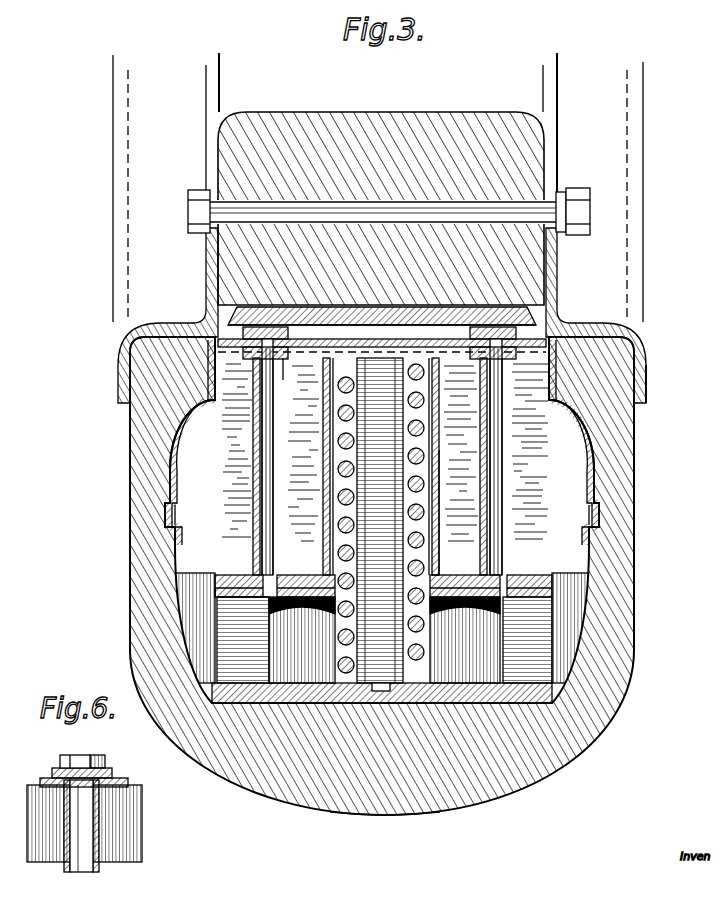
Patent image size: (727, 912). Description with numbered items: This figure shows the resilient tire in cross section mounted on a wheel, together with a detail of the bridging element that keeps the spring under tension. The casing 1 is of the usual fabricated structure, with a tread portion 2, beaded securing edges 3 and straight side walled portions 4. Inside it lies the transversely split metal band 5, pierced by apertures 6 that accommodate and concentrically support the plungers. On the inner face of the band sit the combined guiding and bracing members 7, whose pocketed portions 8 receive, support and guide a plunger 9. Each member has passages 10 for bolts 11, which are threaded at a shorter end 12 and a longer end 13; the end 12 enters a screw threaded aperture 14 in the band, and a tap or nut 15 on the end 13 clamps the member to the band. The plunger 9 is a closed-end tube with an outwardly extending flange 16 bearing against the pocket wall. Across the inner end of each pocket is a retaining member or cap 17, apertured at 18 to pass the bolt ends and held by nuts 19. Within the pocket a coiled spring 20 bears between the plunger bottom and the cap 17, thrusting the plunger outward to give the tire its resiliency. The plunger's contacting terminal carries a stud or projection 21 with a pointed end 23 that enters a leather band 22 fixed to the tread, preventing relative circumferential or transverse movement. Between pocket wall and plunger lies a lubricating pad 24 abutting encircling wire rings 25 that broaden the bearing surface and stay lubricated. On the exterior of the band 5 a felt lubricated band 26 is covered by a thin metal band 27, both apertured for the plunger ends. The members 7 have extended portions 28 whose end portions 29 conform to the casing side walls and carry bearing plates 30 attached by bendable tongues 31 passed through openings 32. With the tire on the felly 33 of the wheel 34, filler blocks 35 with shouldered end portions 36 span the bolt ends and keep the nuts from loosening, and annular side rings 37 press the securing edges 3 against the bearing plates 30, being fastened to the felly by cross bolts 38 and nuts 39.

In FIG. 3, the casing 1 is at (612, 690).
In FIG. 3, the tread portion 2 is at (394, 816).
In FIG. 3, the securing edges 3 is at (656, 382).
In FIG. 3, the straight side walled portions 4 is at (634, 541).
In FIG. 3, the metal band 5 is at (544, 576).
In FIG. 3, the apertures 6 is at (513, 628).
In FIG. 3, the combined guiding and bracing members 7 is at (385, 452).
In FIG. 3, the pocketed portions 8 is at (325, 518).
In FIG. 3, the plunger 9 is at (337, 647).
In FIG. 3, the passages 10 is at (256, 523).
In FIG. 6, the passages 10 is at (100, 829).
In FIG. 3, the bolts 11 is at (498, 465).
In FIG. 6, the bolts 11 is at (80, 870).
In FIG. 3, the screw threaded end 12 is at (243, 617).
In FIG. 3, the screw threaded end 13 is at (266, 327).
In FIG. 6, the screw threaded end 13 is at (80, 768).
In FIG. 3, the screw threaded apertures 14 is at (250, 577).
In FIG. 3, the tap or nut 15 is at (284, 360).
In FIG. 3, the outwardly extending flange 16 is at (436, 441).
In FIG. 3, the retaining member or cap 17 is at (440, 340).
In FIG. 6, the retaining member or cap 17 is at (118, 778).
In FIG. 6, the apertures 18 is at (58, 770).
In FIG. 3, the nuts 19 is at (282, 347).
In FIG. 6, the nuts 19 is at (105, 768).
In FIG. 3, the coiled spring 20 is at (381, 520).
In FIG. 3, the stud or projection 21 is at (372, 687).
In FIG. 3, the band 22 is at (241, 683).
In FIG. 3, the pointed end 23 is at (382, 692).
In FIG. 3, the lubricating pad 24 is at (440, 500).
In FIG. 3, the wire rings 25 is at (330, 576).
In FIG. 3, the lubricated band 26 is at (215, 588).
In FIG. 3, the thin metal band 27 is at (220, 598).
In FIG. 3, the extended portions 28 is at (382, 497).
In FIG. 3, the end portions 29 is at (200, 445).
In FIG. 3, the bearing plate 30 is at (600, 456).
In FIG. 3, the bendable tongues 31 is at (214, 423).
In FIG. 3, the openings 32 is at (212, 538).
In FIG. 3, the felly 33 is at (383, 120).
In FIG. 3, the wheel 34 is at (378, 187).
In FIG. 3, the filler blocks 35 is at (378, 322).
In FIG. 3, the shouldered or cut away end portions 36 is at (332, 318).
In FIG. 3, the annular side rings 37 is at (208, 297).
In FIG. 3, the cross bolts 38 is at (372, 203).
In FIG. 3, the nuts 39 is at (573, 193).